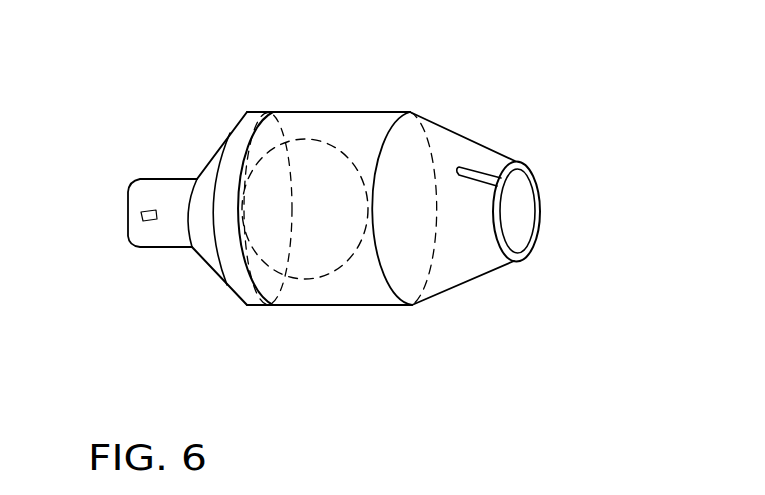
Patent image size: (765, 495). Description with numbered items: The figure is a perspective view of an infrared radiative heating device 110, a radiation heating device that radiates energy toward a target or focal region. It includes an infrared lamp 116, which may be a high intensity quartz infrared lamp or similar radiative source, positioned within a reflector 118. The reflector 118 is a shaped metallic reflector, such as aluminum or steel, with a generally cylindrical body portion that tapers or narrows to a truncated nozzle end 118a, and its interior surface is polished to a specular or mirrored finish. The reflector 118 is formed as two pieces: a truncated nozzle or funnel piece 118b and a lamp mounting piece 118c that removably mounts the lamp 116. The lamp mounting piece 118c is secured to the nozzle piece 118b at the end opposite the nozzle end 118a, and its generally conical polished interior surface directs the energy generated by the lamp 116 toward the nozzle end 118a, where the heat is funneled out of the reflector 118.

The infrared radiative heating device 110 is at (256, 60).
The infrared lamp 116 is at (308, 162).
The reflector 118 is at (389, 110).
The nozzle end 118a is at (514, 165).
The nozzle piece 118b is at (342, 298).
The lamp mounting piece 118c is at (215, 268).